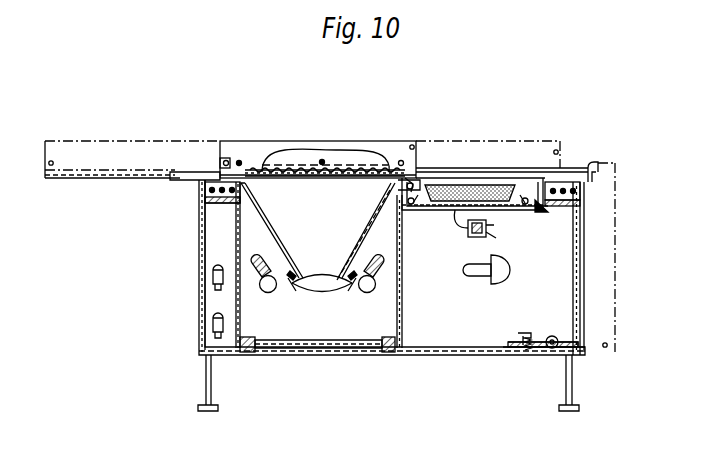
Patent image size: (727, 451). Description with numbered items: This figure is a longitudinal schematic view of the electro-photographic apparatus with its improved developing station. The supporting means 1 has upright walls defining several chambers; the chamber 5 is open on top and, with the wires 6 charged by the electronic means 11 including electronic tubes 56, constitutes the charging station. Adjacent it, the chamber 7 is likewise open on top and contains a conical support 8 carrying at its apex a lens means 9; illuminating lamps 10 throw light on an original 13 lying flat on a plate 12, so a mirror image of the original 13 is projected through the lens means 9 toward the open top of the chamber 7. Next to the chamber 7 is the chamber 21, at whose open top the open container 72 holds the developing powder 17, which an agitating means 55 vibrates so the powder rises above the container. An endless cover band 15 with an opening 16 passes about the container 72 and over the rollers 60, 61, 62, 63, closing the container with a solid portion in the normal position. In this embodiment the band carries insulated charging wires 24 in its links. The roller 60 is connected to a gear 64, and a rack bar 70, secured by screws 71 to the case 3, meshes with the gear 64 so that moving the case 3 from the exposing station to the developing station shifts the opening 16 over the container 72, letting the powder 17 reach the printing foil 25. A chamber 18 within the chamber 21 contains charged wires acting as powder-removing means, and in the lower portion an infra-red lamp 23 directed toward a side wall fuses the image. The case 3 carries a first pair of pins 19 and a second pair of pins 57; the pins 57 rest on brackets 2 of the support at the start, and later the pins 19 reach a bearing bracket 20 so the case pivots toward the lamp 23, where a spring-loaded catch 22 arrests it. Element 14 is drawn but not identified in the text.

The supporting means 1 is at (203, 343).
The brackets 2 is at (190, 186).
The case 3 is at (282, 141).
The chamber 5 is at (215, 207).
The wires 6 is at (236, 180).
The chamber 7 is at (368, 188).
The conical support 8 is at (349, 252).
The lens means 9 is at (316, 284).
The illuminating lamps 10 is at (268, 292).
The electronic means 11 is at (215, 248).
The plate 12 is at (372, 352).
The original 13 is at (345, 349).
The hatched bar 14 is at (555, 203).
The cover band 15 is at (545, 212).
The opening 16 is at (482, 214).
The developing powder 17 is at (462, 186).
The chamber 18 is at (570, 190).
The projecting pins 19 is at (226, 160).
The bearing bracket 20 is at (600, 166).
The chamber 21 is at (540, 330).
The spring-loaded catch 22 is at (586, 353).
The infra-red lamp 23 is at (494, 288).
The charging wires 24 is at (522, 214).
The printing foil 25 is at (299, 170).
The agitating means 55 is at (478, 238).
The electronic tubes 56 is at (216, 289).
The projecting pins 57 is at (411, 185).
The roller 60 is at (420, 176).
The roller 61 is at (527, 218).
The roller 62 is at (547, 207).
The roller 63 is at (407, 222).
The gear 64 is at (401, 162).
The rack bar 70 is at (256, 170).
The screws 71 is at (322, 160).
The open container 72 is at (447, 212).